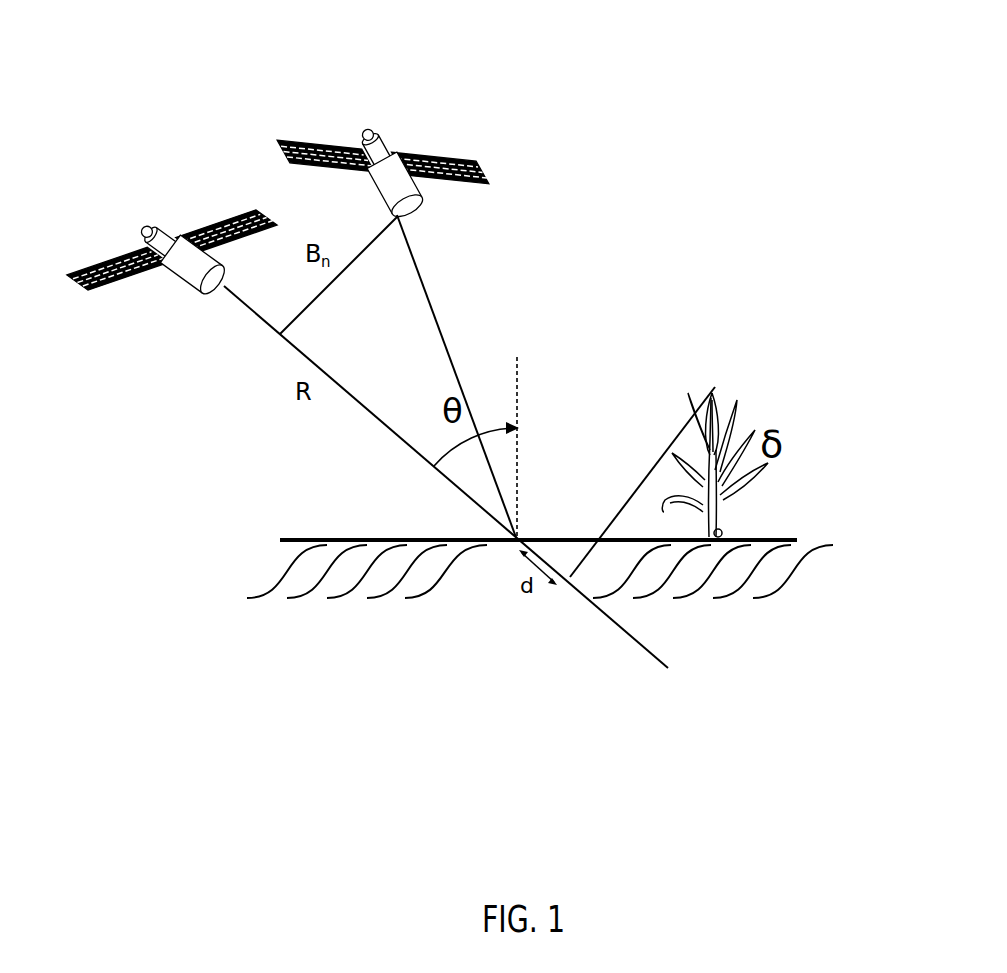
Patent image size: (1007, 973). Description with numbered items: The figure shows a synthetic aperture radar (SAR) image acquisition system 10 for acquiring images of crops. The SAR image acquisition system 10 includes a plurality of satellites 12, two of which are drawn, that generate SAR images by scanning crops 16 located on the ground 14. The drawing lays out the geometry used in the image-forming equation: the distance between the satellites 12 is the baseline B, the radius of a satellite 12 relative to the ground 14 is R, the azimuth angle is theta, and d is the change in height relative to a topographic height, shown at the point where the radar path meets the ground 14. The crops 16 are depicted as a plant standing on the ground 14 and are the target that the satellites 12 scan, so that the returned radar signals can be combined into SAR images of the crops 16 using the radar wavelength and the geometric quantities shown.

The SAR image acquisition system 10 is at (592, 150).
The satellite 12 is at (175, 228).
The ground 14 is at (807, 570).
The crops 16 is at (726, 403).